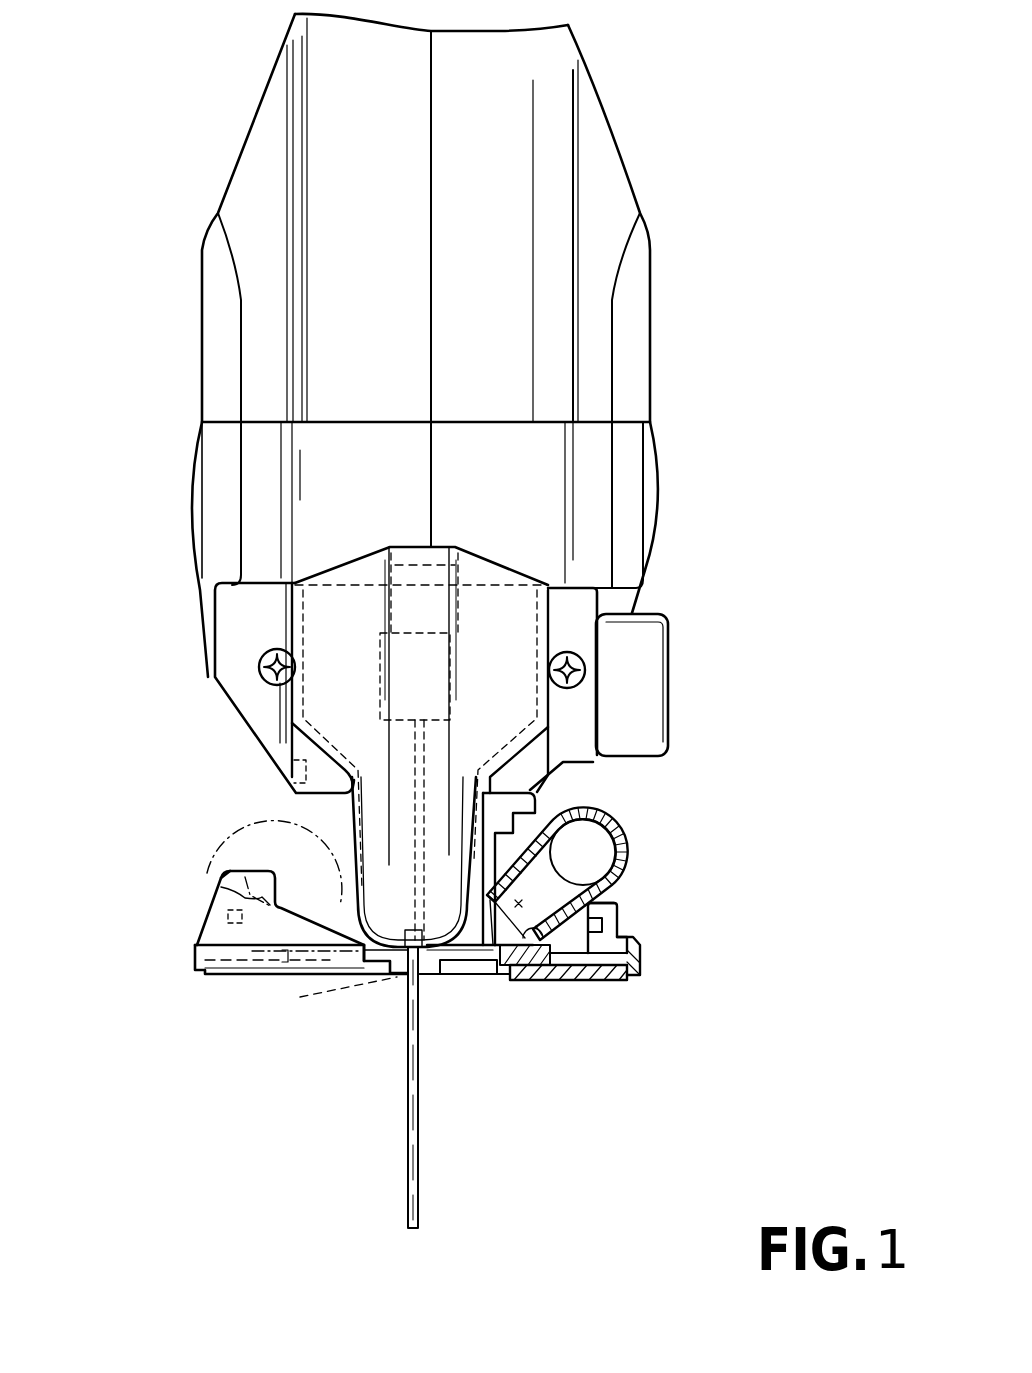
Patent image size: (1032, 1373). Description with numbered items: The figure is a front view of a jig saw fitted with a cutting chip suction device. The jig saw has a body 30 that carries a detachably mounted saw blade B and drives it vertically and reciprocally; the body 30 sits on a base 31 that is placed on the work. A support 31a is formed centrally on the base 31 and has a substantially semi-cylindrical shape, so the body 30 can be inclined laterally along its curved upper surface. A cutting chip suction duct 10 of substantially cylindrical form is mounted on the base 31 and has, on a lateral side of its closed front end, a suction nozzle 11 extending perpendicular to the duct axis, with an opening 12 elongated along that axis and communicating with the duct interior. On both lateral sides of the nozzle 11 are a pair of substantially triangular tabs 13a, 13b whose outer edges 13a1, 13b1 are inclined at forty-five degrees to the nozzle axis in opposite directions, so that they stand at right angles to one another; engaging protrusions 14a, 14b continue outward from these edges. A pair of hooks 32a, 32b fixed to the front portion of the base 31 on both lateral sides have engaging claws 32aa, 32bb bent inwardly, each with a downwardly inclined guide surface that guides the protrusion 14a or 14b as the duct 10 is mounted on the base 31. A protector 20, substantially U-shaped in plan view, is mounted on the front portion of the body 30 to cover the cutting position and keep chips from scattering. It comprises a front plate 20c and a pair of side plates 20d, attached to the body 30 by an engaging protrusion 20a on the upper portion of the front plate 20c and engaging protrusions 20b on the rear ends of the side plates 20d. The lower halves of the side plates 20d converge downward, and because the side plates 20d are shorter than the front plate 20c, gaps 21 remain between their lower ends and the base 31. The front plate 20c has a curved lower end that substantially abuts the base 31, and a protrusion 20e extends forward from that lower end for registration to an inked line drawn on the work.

The body 30 is at (668, 233).
The protector 20 is at (429, 688).
The engaging protrusion 20a is at (430, 557).
The engaging protrusions 20b is at (295, 773).
The front plate 20c is at (338, 642).
The side plates 20d is at (275, 703).
The protrusion 20e is at (428, 833).
The cutting chip suction duct 10 is at (213, 823).
The suction nozzle 11 is at (506, 945).
The opening 12 is at (490, 948).
The tab 13a is at (625, 843).
The outer edge 13a1 is at (470, 952).
The tab 13b is at (567, 930).
The outer edge 13b1 is at (633, 976).
The engaging protrusion 14a is at (515, 823).
The engaging protrusion 14b is at (640, 952).
The gaps 21 is at (310, 999).
The base 31 is at (194, 958).
The support 31a is at (362, 942).
The hook 32a is at (197, 920).
The engaging claw 32aa is at (220, 887).
The hook 32b is at (617, 923).
The engaging claw 32bb is at (618, 906).
The saw blade B is at (407, 1095).